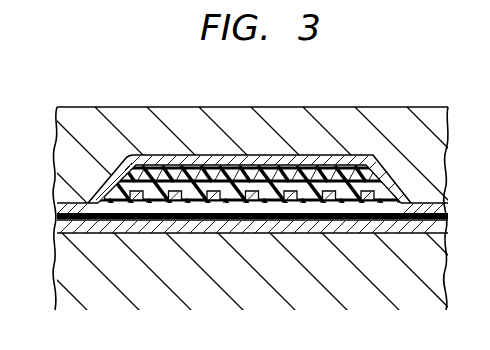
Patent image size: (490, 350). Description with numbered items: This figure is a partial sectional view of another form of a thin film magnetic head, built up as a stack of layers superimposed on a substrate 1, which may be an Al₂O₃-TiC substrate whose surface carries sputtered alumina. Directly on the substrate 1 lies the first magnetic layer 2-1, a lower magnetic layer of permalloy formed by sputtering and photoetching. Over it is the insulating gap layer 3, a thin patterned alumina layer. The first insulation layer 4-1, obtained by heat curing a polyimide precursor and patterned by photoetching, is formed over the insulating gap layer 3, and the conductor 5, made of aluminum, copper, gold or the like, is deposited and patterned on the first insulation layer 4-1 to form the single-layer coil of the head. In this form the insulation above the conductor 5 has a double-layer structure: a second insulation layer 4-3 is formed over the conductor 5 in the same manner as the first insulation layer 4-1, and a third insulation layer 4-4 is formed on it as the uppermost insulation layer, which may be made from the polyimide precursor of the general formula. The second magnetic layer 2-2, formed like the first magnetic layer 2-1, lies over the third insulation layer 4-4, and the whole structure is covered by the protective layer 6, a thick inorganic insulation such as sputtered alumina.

The substrate 1 is at (77, 257).
The first magnetic layer 2-1 is at (192, 226).
The second magnetic layer 2-2 is at (265, 165).
The insulating gap layer 3 is at (263, 218).
The first insulation layer 4-1 is at (322, 212).
The second insulation layer 4-3 is at (145, 167).
The third insulation layer 4-4 is at (200, 167).
The conductor 5 is at (367, 198).
The protective layer 6 is at (345, 118).